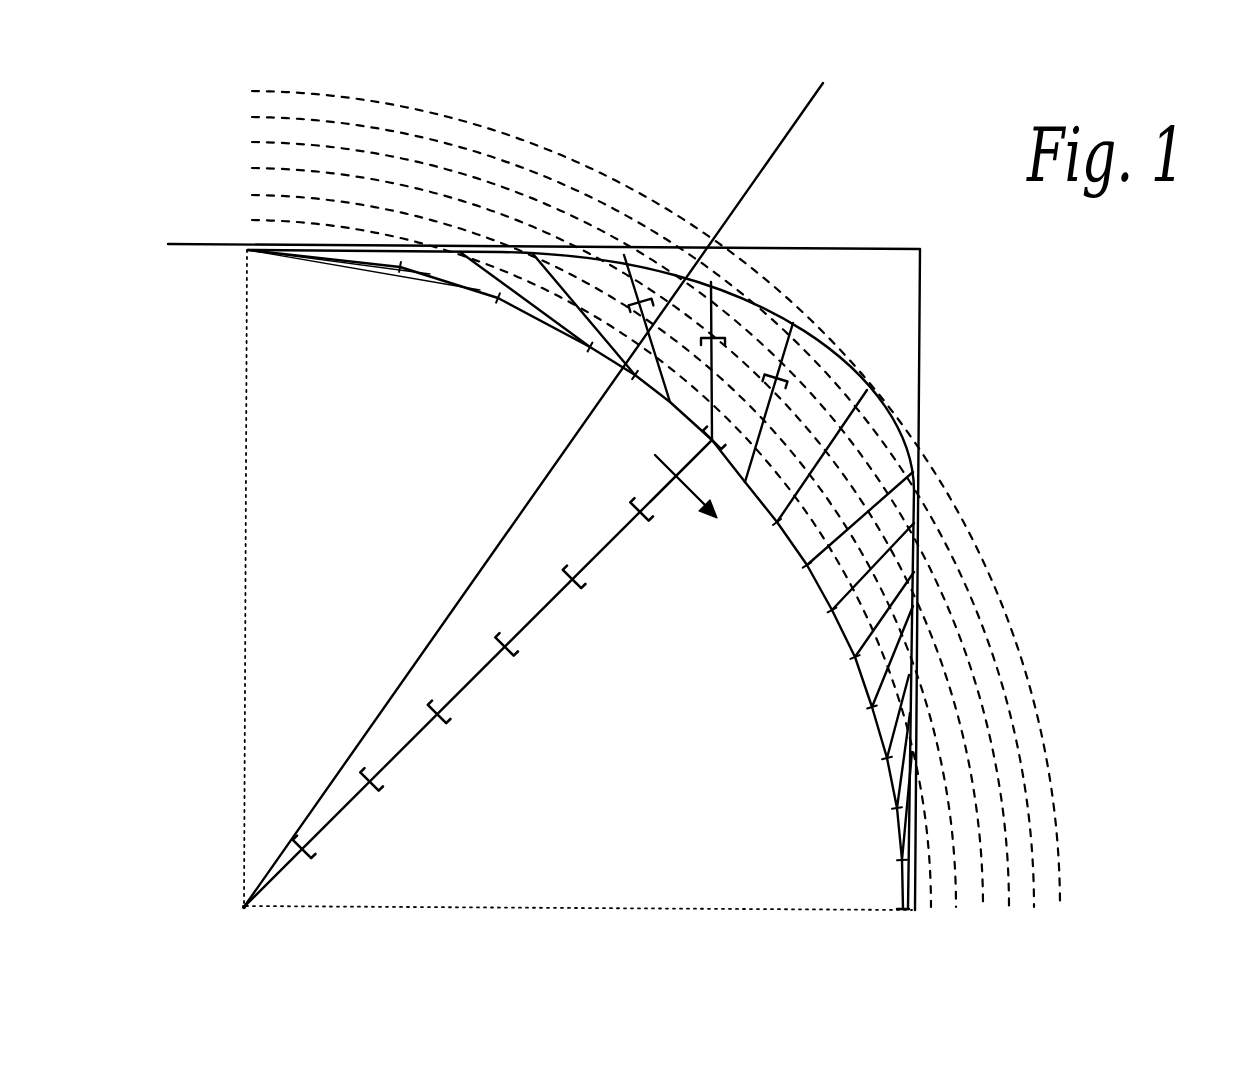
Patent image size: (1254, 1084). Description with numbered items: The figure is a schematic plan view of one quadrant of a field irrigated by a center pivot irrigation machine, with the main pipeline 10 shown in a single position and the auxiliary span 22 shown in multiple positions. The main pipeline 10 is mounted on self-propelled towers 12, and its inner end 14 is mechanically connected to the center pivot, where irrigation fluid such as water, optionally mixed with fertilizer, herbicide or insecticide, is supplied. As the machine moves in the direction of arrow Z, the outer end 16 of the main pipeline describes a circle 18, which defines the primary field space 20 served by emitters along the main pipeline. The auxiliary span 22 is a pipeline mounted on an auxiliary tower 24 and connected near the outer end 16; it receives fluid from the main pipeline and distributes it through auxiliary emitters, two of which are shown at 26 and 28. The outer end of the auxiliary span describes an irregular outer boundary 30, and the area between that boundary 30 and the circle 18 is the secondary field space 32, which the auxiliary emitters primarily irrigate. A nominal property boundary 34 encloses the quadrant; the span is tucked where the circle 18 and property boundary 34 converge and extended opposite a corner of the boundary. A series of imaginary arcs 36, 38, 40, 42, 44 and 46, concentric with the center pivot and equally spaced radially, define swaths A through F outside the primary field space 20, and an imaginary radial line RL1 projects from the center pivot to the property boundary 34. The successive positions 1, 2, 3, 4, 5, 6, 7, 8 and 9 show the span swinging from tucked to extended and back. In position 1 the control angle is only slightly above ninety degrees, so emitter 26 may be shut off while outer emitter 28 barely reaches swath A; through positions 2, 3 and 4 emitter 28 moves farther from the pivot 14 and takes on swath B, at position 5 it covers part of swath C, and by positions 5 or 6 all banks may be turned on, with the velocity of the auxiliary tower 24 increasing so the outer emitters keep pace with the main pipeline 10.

The position 1 is at (366, 260).
The position 2 is at (426, 268).
The position 3 is at (522, 298).
The position 4 is at (563, 322).
The position 5 is at (613, 358).
The position 6 is at (705, 388).
The position 7 is at (762, 462).
The position 8 is at (797, 500).
The position 9 is at (832, 538).
The main pipeline 10 is at (415, 742).
The self-propelled towers 12 is at (312, 860).
The inner end 14 is at (246, 904).
The outer end 16 is at (705, 438).
The circle 18 is at (797, 495).
The primary field space 20 is at (578, 580).
The auxiliary span 22 is at (645, 298).
The auxiliary tower 24 is at (712, 335).
The auxiliary emitter 26 is at (705, 426).
The outer auxiliary emitter 28 is at (714, 282).
The irregular outer boundary 30 is at (722, 345).
The secondary field space 32 is at (656, 585).
The property boundary 34 is at (898, 248).
The imaginary arc 36 is at (266, 222).
The imaginary arc 38 is at (260, 196).
The imaginary arc 40 is at (266, 170).
The imaginary arc 42 is at (262, 144).
The imaginary arc 44 is at (266, 118).
The imaginary arc 46 is at (262, 90).
The imaginary radial line RL1 is at (808, 104).
The direction arrow Z is at (686, 510).